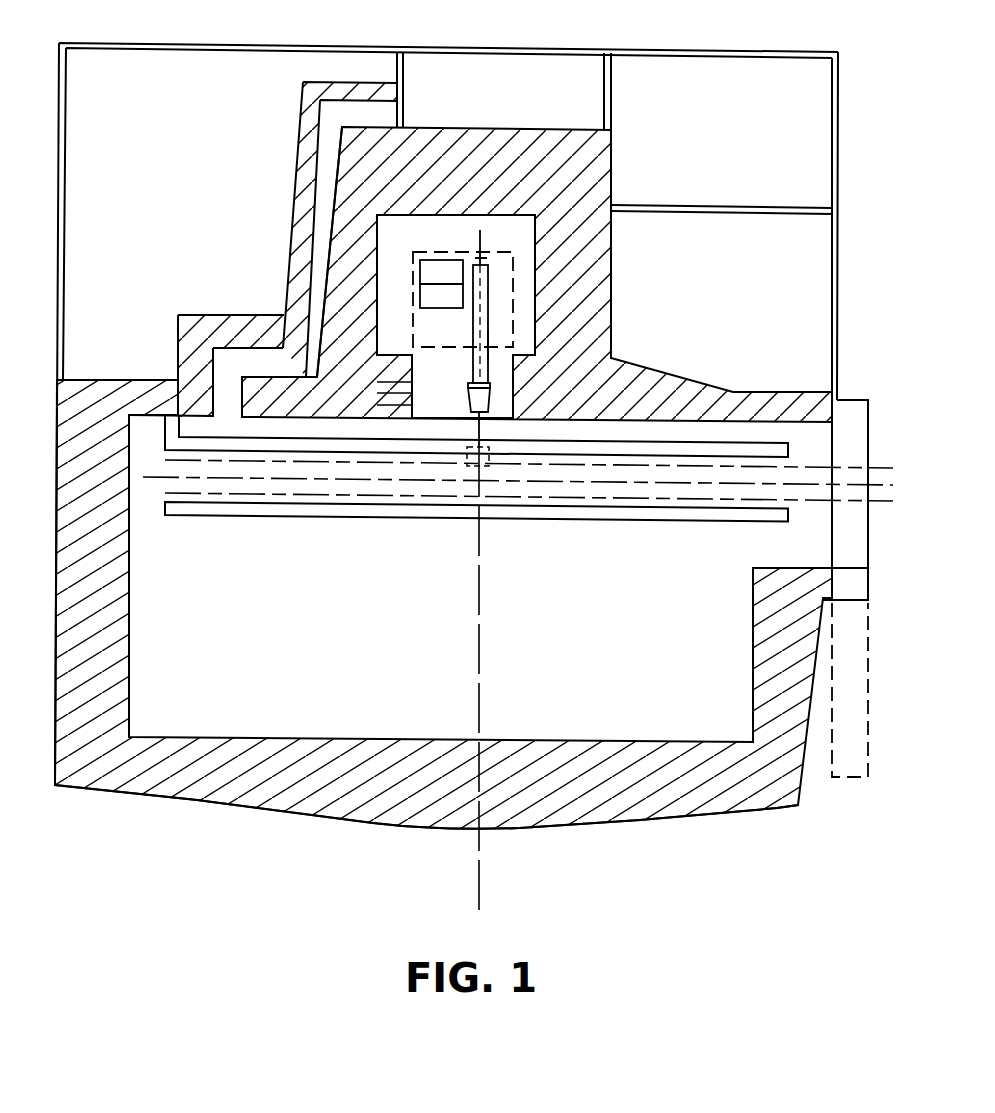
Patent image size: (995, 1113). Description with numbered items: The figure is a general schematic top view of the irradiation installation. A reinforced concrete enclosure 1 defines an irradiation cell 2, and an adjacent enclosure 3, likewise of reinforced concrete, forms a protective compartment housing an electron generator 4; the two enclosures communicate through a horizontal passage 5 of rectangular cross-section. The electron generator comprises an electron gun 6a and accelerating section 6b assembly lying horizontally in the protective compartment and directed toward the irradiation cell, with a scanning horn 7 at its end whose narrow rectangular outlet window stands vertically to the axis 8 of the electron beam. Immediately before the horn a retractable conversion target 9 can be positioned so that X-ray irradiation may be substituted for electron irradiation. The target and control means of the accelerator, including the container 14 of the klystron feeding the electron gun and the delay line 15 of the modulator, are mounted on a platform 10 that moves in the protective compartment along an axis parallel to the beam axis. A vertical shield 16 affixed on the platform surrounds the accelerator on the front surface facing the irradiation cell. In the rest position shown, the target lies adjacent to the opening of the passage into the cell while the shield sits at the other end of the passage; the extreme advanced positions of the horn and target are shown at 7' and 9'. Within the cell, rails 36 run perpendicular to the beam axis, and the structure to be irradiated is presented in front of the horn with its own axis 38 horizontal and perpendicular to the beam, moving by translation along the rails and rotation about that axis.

The enclosure 1 is at (185, 803).
The irradiation cell 2 is at (165, 672).
The adjacent enclosure 3 is at (538, 126).
The electron generator 4 is at (496, 312).
The horizontal passage 5 is at (290, 320).
The electron gun 6a is at (486, 262).
The accelerating section 6b is at (489, 344).
The scanning horn 7 is at (406, 477).
The extreme advanced position of the horn 7' is at (531, 489).
The axis of the electron beam 8 is at (478, 632).
The conversion target 9 is at (455, 474).
The extreme advanced position of the target 9' is at (493, 506).
The platform 10 is at (467, 246).
The container of a klystron 14 is at (432, 268).
The delay line 15 is at (432, 297).
The shield 16 is at (432, 343).
The rails 36 is at (690, 500).
The axis of the structure 38 is at (273, 478).